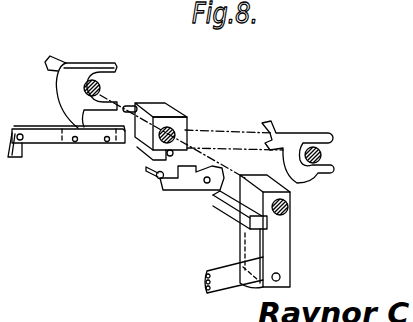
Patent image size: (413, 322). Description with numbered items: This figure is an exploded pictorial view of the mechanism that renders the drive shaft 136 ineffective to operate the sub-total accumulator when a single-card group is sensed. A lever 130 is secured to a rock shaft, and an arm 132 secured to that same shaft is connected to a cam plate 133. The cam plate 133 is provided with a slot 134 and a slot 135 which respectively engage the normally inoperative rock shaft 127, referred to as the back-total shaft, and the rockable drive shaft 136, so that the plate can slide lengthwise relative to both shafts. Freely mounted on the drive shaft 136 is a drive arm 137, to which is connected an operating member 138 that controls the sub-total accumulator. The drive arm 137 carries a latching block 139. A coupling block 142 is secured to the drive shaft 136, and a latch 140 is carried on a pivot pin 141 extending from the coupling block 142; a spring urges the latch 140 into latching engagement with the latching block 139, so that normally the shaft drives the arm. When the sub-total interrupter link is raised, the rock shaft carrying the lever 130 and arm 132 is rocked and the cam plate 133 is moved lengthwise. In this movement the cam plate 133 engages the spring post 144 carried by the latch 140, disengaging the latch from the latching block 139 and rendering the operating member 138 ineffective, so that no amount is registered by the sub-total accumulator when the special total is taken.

The rock shaft 127 is at (331, 160).
The lever 130 is at (9, 0).
The arm 132 is at (18, 162).
The cam plate 133 is at (55, 145).
The slot 134 is at (331, 143).
The slot 135 is at (97, 78).
The drive shaft 136 is at (57, 65).
The drive arm 137 is at (273, 235).
The operating member 138 is at (222, 272).
The latching block 139 is at (215, 196).
The latch 140 is at (163, 182).
The pivot pin 141 is at (150, 150).
The coupling block 142 is at (134, 102).
The spring post 144 is at (152, 172).